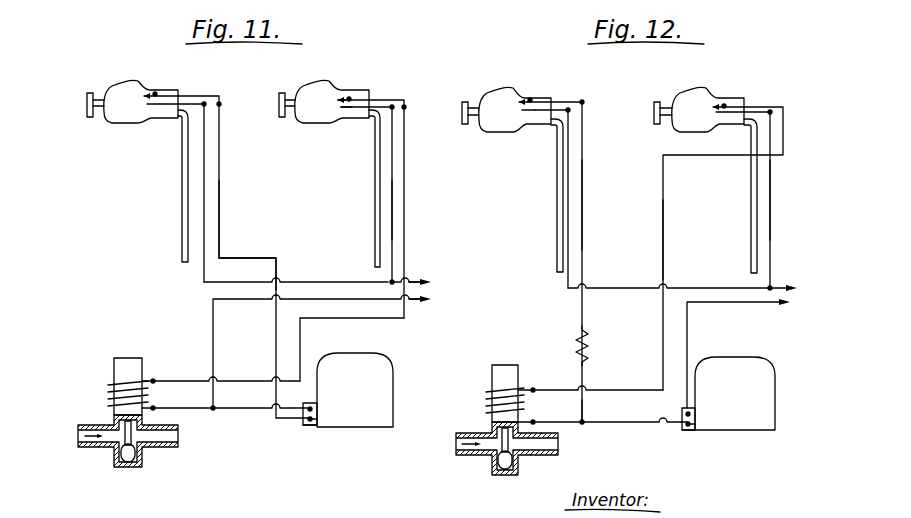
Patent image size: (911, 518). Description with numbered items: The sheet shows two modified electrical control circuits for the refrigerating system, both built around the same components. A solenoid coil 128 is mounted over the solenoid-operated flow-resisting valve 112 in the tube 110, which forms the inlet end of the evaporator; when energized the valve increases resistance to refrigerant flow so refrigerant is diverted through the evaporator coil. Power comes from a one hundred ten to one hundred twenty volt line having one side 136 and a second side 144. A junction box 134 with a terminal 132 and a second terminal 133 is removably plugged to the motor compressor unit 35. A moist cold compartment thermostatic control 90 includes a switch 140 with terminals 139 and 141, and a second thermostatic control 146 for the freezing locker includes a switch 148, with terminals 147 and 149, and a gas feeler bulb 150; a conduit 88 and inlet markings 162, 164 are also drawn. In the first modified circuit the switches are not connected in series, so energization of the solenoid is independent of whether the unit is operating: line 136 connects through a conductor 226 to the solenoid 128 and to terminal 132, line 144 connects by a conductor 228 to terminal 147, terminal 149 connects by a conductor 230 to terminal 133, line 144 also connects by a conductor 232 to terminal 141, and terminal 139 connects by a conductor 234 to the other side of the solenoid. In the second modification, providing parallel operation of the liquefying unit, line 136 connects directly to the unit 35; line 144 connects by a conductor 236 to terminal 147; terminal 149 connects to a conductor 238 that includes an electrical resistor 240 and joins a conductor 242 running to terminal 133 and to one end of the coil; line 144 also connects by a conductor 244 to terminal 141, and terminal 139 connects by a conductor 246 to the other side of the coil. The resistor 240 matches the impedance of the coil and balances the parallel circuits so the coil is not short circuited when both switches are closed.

In FIG. 11, the motor compressor unit 35 is at (368, 400).
In FIG. 12, the motor compressor unit 35 is at (746, 402).
In FIG. 11, the conduit tube 88 is at (374, 192).
In FIG. 12, the conduit tube 88 is at (750, 228).
In FIG. 11, the moist cold compartment thermostatic control 90 is at (312, 92).
In FIG. 12, the moist cold compartment thermostatic control 90 is at (678, 100).
In FIG. 11, the tube 110 is at (84, 428).
In FIG. 12, the tube 110 is at (470, 434).
In FIG. 11, the solenoid-operated flow-resisting valve 112 is at (122, 442).
In FIG. 12, the solenoid-operated flow-resisting valve 112 is at (500, 449).
In FIG. 11, the solenoid coil 128 is at (110, 392).
In FIG. 12, the solenoid coil 128 is at (488, 396).
In FIG. 11, the terminal 132 is at (306, 403).
In FIG. 12, the terminal 132 is at (682, 412).
In FIG. 11, the second terminal 133 is at (320, 426).
In FIG. 12, the second terminal 133 is at (690, 432).
In FIG. 11, the junction box 134 is at (304, 430).
In FIG. 12, the junction box 134 is at (678, 432).
In FIG. 11, the side of the line 136 is at (420, 301).
In FIG. 12, the side of the line 136 is at (740, 306).
In FIG. 11, the terminal 139 is at (407, 107).
In FIG. 12, the terminal 139 is at (784, 108).
In FIG. 11, the switch 140 is at (347, 96).
In FIG. 12, the switch 140 is at (718, 102).
In FIG. 11, the terminal 141 is at (392, 100).
In FIG. 12, the terminal 141 is at (770, 108).
In FIG. 11, the second side of the line 144 is at (418, 280).
In FIG. 12, the second side of the line 144 is at (786, 284).
In FIG. 11, the second thermostatic control 146 is at (123, 92).
In FIG. 12, the second thermostatic control 146 is at (494, 100).
In FIG. 11, the terminal 147 is at (206, 100).
In FIG. 12, the terminal 147 is at (566, 116).
In FIG. 11, the switch 148 is at (147, 92).
In FIG. 12, the switch 148 is at (520, 98).
In FIG. 11, the second terminal 149 is at (219, 112).
In FIG. 12, the second terminal 149 is at (584, 104).
In FIG. 11, the gas feeler bulb 150 is at (181, 186).
In FIG. 12, the gas feeler bulb 150 is at (558, 196).
In FIG. 11, the fuel inlet 162 is at (277, 105).
In FIG. 12, the fuel inlet 162 is at (460, 128).
In FIG. 11, the fuel inlet 164 is at (85, 105).
In FIG. 11, the conductor 226 is at (214, 412).
In FIG. 11, the conductor 228 is at (310, 282).
In FIG. 11, the conductor 230 is at (220, 198).
In FIG. 11, the conductor 232 is at (393, 200).
In FIG. 11, the conductor 234 is at (350, 319).
In FIG. 12, the conductor 236 is at (630, 276).
In FIG. 12, the conductor 238 is at (584, 192).
In FIG. 12, the electrical resistor 240 is at (580, 342).
In FIG. 12, the conductor 242 is at (582, 426).
In FIG. 12, the conductor 244 is at (769, 192).
In FIG. 12, the conductor 246 is at (664, 246).